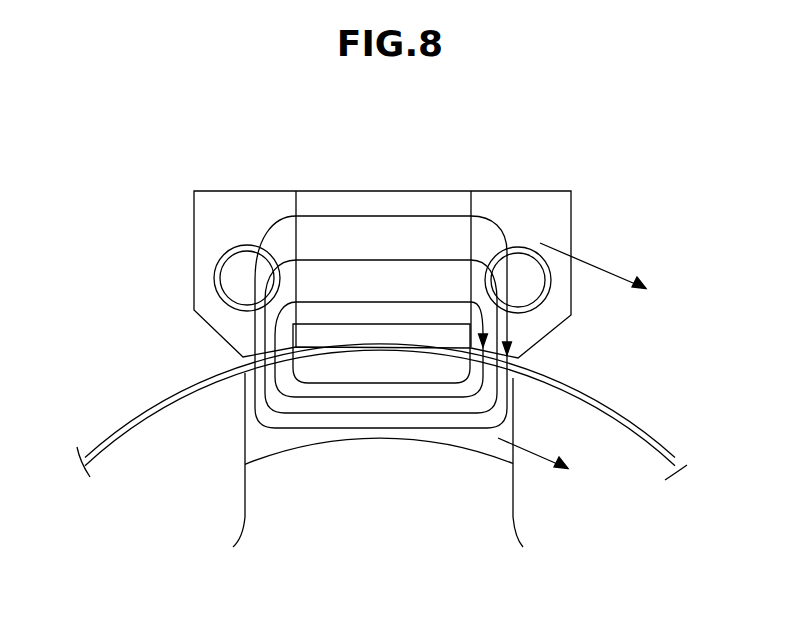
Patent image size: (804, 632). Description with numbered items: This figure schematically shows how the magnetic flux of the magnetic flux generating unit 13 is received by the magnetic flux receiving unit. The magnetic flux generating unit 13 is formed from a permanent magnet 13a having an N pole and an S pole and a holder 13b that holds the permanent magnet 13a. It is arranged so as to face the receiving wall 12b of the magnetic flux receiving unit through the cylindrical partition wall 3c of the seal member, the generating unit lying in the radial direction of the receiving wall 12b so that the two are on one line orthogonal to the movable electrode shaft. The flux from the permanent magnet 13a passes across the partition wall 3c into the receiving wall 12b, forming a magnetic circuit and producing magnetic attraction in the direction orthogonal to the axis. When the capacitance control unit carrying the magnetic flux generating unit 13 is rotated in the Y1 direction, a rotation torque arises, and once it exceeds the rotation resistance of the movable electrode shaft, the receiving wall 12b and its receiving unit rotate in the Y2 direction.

The magnetic flux generating unit 13 is at (275, 133).
The permanent magnet 13a is at (356, 203).
The holder 13b is at (267, 204).
The partition wall 3c is at (623, 418).
The receiving wall 12b is at (500, 453).
The Y1 direction Y1 is at (605, 268).
The Y2 direction Y2 is at (532, 460).